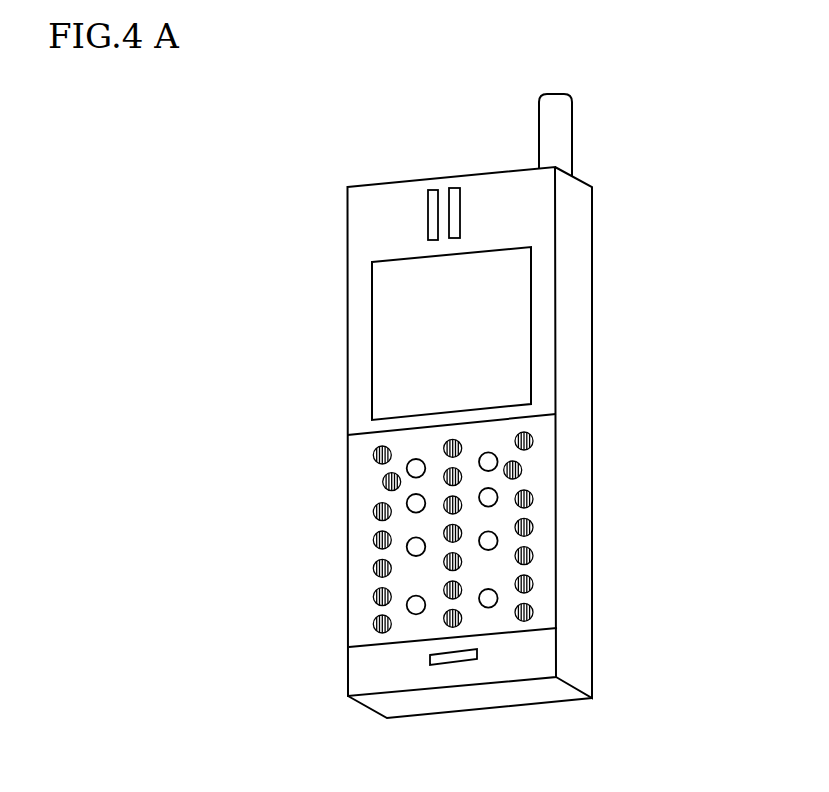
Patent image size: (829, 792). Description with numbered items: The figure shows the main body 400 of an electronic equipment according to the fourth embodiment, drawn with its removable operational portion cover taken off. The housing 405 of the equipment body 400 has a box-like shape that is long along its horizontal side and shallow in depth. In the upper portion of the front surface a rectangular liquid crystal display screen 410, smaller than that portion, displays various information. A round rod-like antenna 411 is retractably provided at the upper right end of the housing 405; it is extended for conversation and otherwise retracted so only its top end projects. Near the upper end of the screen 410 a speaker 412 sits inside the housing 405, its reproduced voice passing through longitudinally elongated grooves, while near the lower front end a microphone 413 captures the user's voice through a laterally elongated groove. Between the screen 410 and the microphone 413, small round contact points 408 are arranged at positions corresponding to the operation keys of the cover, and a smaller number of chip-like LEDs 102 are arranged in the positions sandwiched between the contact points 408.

The main body 400 is at (461, 67).
The housing 405 is at (347, 211).
The antenna 411 is at (560, 132).
The speaker 412 is at (428, 204).
The liquid crystal display screen 410 is at (385, 333).
The contact points 408 is at (533, 438).
The chip-like LEDs 102 is at (407, 502).
The microphone 413 is at (452, 659).